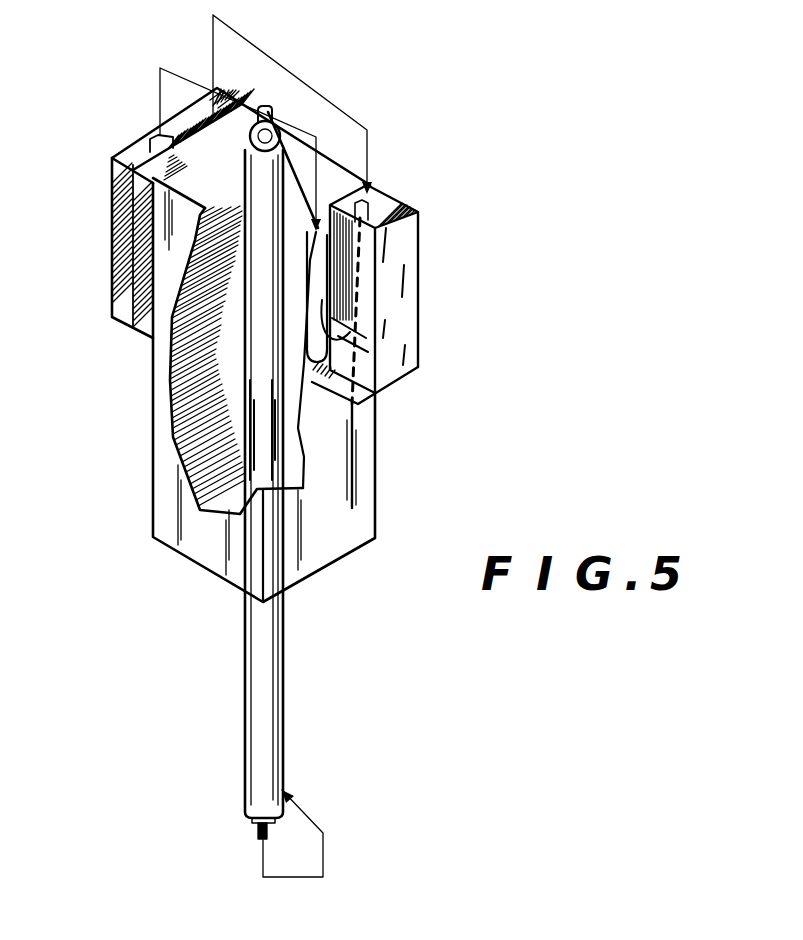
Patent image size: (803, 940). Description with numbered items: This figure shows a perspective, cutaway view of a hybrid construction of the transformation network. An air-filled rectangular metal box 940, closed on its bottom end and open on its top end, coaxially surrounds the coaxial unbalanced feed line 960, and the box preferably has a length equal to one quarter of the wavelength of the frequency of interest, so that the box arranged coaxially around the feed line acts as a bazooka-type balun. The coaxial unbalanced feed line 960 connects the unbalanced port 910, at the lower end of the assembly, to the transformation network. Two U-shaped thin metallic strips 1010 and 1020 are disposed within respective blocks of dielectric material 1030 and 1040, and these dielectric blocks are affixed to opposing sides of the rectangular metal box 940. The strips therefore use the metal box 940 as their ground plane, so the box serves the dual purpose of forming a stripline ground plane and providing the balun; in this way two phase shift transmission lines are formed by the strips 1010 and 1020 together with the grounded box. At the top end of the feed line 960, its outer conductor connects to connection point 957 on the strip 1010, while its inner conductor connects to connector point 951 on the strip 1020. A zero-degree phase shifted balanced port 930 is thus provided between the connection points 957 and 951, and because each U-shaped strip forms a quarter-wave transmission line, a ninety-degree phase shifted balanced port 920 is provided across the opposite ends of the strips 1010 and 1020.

The unbalanced port 910 is at (323, 853).
The 90° phase shifted balanced port 920 is at (310, 112).
The 0° phase shifted balanced port 930 is at (263, 78).
The rectangular metal box 940 is at (343, 523).
The connector point 951 is at (213, 92).
The connection point 957 is at (314, 234).
The coaxial unbalanced feed line 960 is at (282, 452).
The U-shaped thin metallic strip 1010 is at (330, 348).
The U-shaped thin metallic strip 1020 is at (160, 133).
The dielectric material 1030 is at (403, 197).
The dielectric material 1040 is at (140, 277).